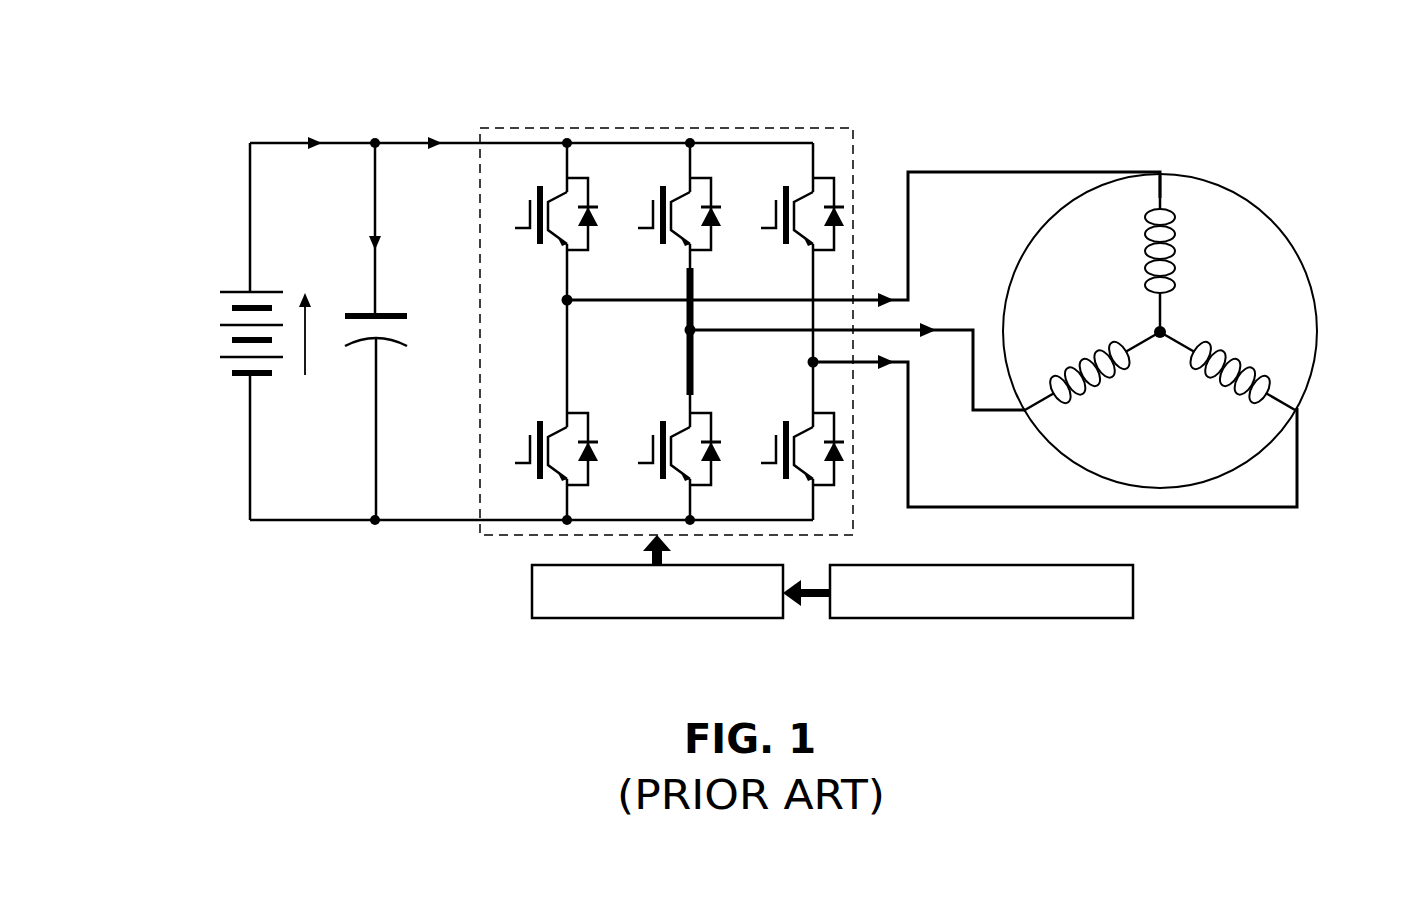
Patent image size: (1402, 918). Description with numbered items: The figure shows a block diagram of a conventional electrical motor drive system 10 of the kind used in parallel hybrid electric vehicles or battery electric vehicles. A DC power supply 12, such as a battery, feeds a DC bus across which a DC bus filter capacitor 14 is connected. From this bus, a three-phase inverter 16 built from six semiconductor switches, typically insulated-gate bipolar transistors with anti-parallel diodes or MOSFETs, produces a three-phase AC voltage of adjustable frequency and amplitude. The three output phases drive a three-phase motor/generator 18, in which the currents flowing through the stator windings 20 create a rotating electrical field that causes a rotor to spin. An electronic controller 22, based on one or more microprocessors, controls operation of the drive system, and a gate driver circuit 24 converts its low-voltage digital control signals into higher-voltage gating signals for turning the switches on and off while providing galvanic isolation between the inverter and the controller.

The electrical motor drive system 10 is at (337, 50).
The DC power supply 12 is at (240, 290).
The DC bus filter capacitor 14 is at (362, 345).
The three-phase inverter 16 is at (836, 128).
The three-phase motor/generator 18 is at (1179, 318).
The stator windings 20 is at (1250, 352).
The electronic controller 22 is at (1133, 576).
The gate driver circuit 24 is at (532, 585).